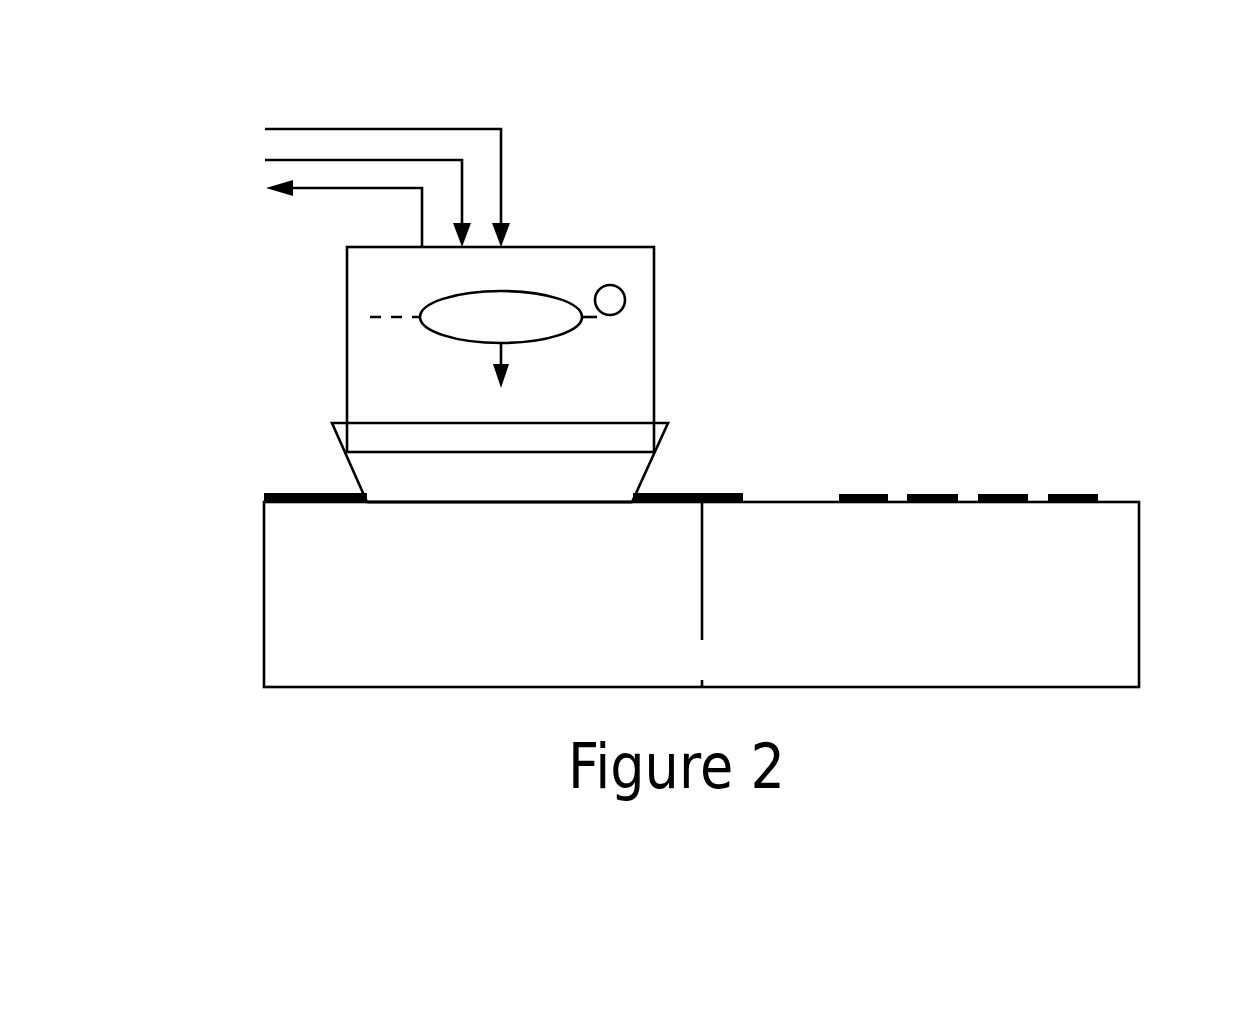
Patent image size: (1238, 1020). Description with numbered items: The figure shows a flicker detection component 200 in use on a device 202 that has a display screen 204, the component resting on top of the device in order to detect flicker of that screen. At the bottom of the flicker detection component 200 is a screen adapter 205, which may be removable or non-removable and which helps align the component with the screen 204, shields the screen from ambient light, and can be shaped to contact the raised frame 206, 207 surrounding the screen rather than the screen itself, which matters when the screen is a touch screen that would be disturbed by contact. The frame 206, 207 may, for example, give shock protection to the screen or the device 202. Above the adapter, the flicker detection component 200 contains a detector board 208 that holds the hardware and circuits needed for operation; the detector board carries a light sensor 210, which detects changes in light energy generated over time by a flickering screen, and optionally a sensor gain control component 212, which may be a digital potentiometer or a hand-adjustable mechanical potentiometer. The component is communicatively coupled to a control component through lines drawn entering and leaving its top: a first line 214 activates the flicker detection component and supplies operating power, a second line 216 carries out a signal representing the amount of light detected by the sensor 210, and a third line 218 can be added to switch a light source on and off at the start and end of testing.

The flicker detection component 200 is at (654, 393).
The device 202 is at (1139, 583).
The display screen 204 is at (393, 503).
The screen adapter 205 is at (352, 470).
The frame 206 is at (275, 493).
The frame 207 is at (684, 494).
The detector board 208 is at (379, 313).
The light sensor 210 is at (512, 291).
The sensor gain control component 212 is at (625, 301).
The first line 214 is at (268, 160).
The second line 216 is at (317, 190).
The third line 218 is at (317, 129).